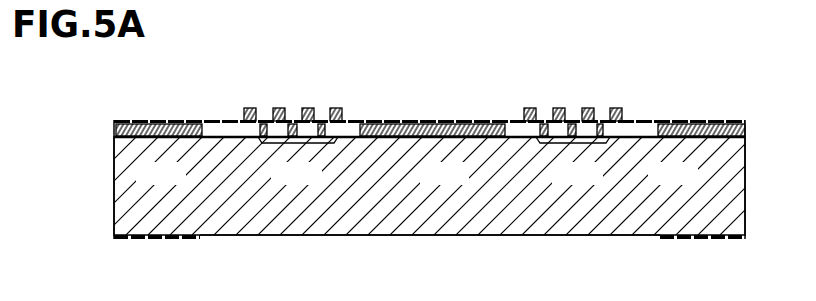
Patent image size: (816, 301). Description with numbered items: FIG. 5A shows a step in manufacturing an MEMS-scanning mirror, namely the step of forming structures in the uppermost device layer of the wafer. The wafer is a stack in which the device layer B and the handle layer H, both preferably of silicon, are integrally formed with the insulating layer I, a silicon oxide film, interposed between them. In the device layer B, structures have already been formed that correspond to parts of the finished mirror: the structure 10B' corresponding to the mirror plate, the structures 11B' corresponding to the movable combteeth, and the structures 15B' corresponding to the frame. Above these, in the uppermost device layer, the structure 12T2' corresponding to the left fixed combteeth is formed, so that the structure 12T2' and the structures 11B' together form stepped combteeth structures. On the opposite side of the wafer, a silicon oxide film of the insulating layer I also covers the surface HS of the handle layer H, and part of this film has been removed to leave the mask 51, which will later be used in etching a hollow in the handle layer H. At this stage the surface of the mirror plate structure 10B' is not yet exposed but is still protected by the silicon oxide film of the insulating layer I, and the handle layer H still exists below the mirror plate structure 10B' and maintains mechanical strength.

The structure corresponding to the left fixed combteeth 12T2' is at (432, 89).
The structure corresponding to the frame 15B' is at (430, 156).
The structure corresponding to the movable combteeth 11B' is at (434, 156).
The structure corresponding to the mirror plate 10B' is at (432, 156).
The mask 51 is at (167, 239).
The surface of the handle layer HS is at (437, 237).
The insulating layer I is at (708, 121).
The device layer B is at (745, 124).
The handle layer H is at (722, 175).